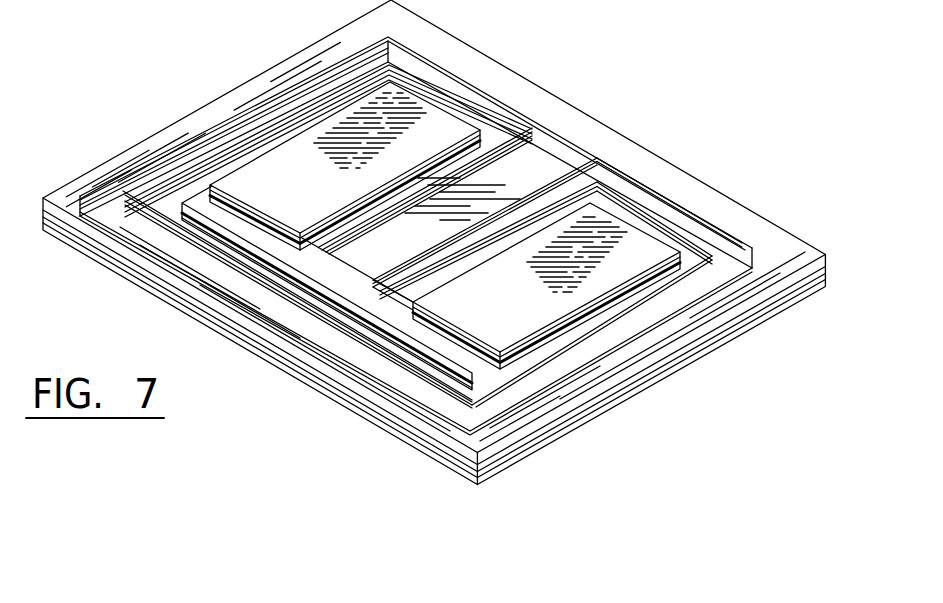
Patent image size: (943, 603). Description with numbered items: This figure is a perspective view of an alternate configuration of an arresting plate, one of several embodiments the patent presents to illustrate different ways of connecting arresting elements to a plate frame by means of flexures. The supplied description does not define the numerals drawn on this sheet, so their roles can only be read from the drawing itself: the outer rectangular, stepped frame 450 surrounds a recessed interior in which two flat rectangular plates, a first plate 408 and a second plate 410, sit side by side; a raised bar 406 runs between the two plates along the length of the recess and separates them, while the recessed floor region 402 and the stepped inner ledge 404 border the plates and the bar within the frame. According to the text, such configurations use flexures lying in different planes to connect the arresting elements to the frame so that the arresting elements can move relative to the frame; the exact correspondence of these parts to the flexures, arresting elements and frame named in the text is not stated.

The frame 450 is at (453, 60).
The floor of frame 402 is at (515, 173).
The pocket 404 is at (537, 217).
The central rail 406 is at (382, 308).
The first substrate 408 is at (311, 194).
The second substrate 410 is at (517, 314).